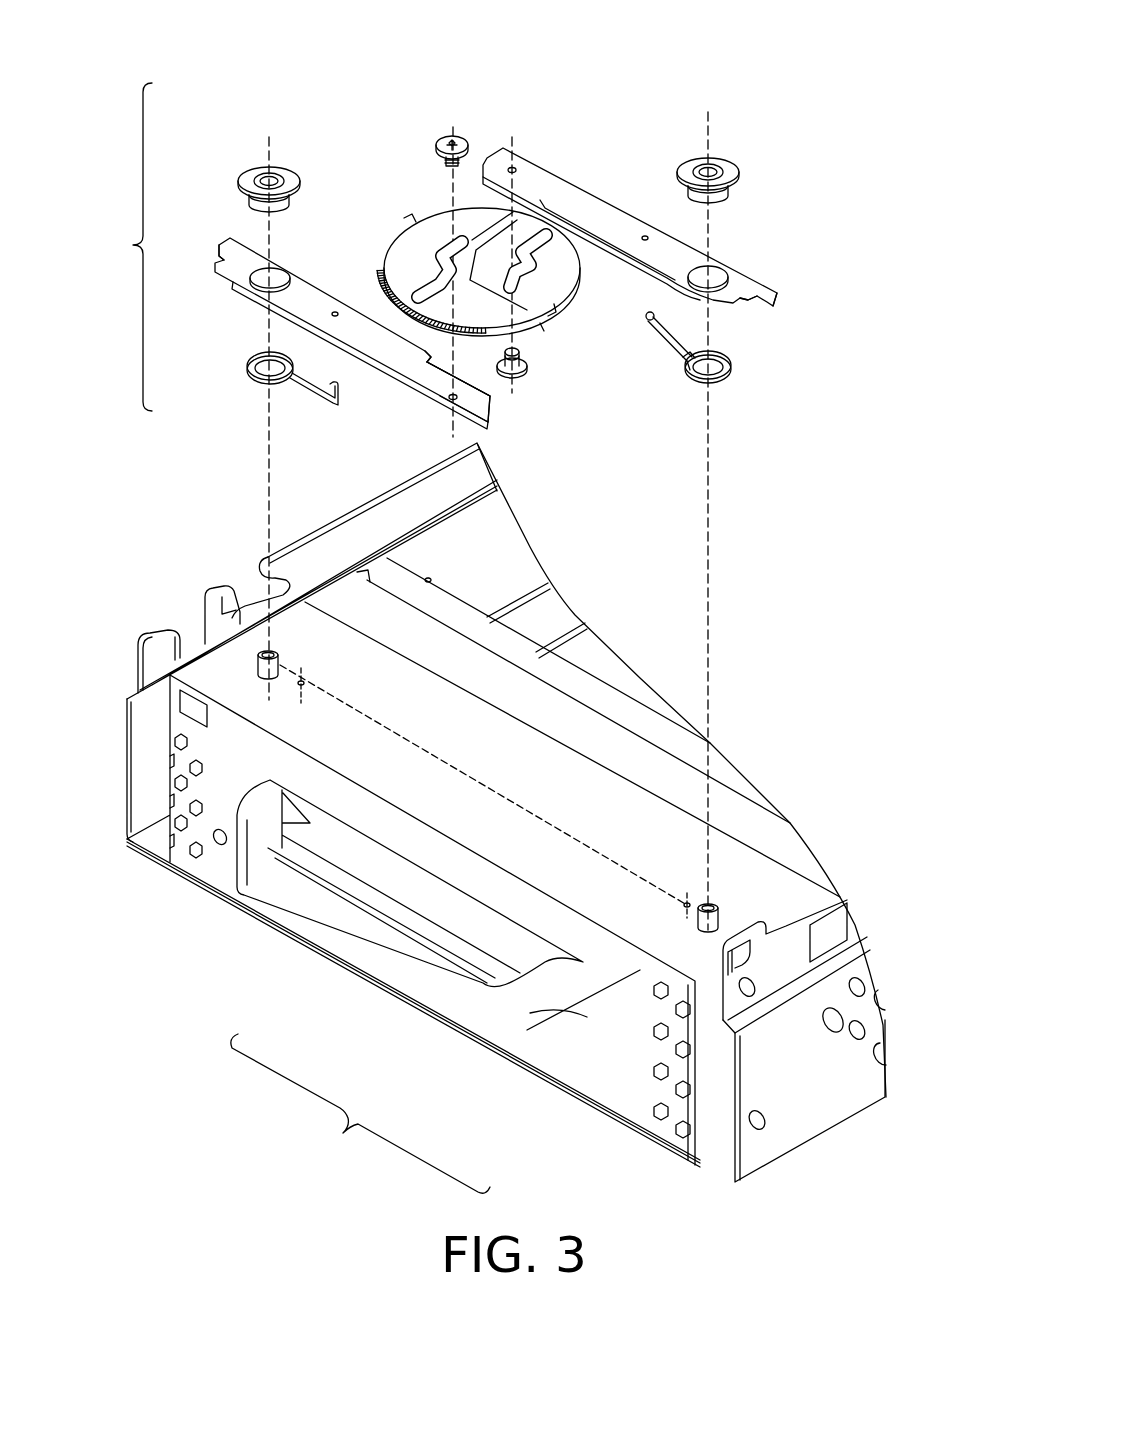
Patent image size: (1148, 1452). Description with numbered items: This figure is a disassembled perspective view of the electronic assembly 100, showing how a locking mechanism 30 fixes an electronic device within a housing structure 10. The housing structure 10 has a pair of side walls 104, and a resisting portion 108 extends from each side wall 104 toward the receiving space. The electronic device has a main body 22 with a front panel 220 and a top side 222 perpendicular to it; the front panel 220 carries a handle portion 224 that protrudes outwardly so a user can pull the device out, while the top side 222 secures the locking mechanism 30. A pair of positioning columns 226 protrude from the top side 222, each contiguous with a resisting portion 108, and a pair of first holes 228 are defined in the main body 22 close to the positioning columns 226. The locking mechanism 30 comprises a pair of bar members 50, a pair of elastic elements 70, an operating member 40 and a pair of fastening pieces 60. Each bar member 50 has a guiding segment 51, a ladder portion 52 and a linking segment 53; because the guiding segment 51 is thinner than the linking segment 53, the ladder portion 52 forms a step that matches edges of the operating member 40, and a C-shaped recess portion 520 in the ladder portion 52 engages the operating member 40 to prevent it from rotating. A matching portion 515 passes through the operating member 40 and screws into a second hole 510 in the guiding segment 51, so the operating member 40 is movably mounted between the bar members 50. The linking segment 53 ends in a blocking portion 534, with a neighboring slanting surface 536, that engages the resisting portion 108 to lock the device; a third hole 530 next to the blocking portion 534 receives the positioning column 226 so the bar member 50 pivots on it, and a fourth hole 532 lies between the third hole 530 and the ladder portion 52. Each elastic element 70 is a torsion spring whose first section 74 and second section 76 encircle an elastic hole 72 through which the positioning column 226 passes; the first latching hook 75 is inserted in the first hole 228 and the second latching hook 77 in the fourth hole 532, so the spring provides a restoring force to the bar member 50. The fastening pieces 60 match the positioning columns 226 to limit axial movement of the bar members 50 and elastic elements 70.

The mounting apparatus 100 is at (505, 55).
The locking mechanism 30 is at (119, 247).
The fastening piece 60 is at (256, 176).
The bar member 50 is at (465, 271).
The linking segment 53 is at (252, 288).
The ladder portion 52 is at (412, 360).
The recess portion 520 is at (432, 385).
The guiding segment 51 is at (470, 408).
The third hole 530 is at (273, 276).
The fourth hole 532 is at (334, 310).
The second hole 510 is at (458, 400).
The slanting surface 536 is at (216, 268).
The blocking portion 534 is at (772, 306).
The matching portion 515 is at (447, 136).
The operating member 40 is at (420, 232).
The elastic element 70 is at (480, 372).
The elastic hole 72 is at (727, 375).
The first section 74 is at (707, 357).
The first latching hook 75 is at (683, 367).
The second section 76 is at (667, 357).
The second latching hook 77 is at (643, 320).
The housing structure 10 is at (412, 565).
The side wall 104 is at (145, 707).
The resisting portion 108 is at (207, 610).
The front panel 220 is at (600, 1057).
The handle portion 224 is at (387, 942).
The first hole 228 is at (560, 950).
The positioning column 226 is at (687, 905).
The top side 222 is at (527, 1030).
The main body 22 is at (360, 1113).